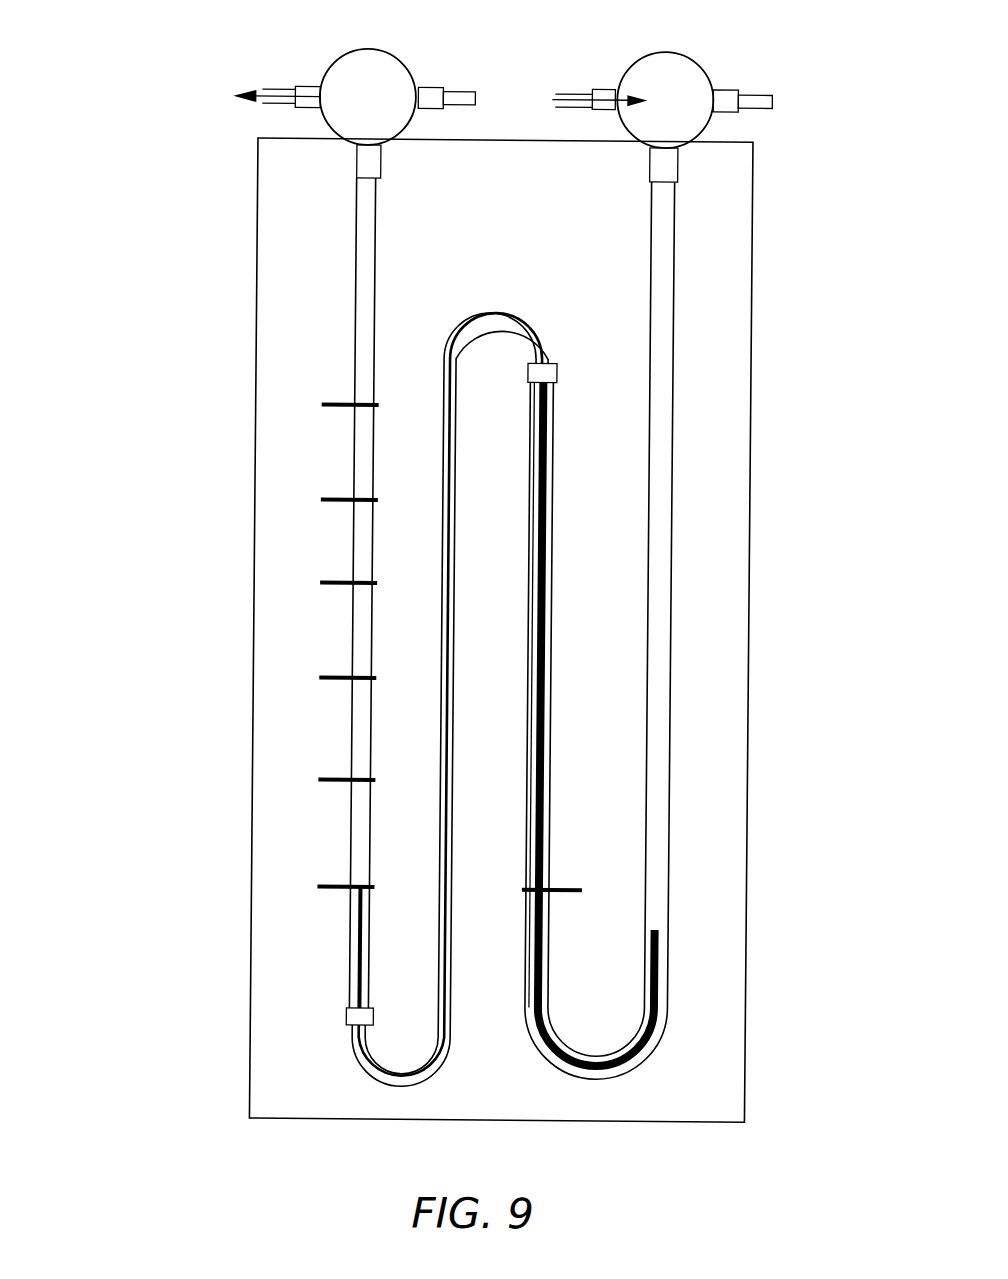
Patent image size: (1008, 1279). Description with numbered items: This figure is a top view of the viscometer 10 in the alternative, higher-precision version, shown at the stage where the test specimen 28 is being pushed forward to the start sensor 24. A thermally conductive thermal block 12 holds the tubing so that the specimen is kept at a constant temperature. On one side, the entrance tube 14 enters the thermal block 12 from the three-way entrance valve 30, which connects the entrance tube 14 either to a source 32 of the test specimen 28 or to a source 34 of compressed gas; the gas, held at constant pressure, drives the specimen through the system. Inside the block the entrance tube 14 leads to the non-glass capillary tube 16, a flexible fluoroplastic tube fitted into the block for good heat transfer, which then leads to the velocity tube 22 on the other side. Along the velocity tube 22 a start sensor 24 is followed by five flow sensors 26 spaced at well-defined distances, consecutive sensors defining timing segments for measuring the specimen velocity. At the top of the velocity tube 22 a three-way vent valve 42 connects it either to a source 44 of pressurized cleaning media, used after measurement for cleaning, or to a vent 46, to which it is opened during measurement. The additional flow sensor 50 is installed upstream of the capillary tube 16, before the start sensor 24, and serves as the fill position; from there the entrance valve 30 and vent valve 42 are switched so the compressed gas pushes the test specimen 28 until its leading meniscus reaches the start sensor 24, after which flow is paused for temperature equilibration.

The viscometer 10 is at (132, 534).
The thermal block 12 is at (703, 767).
The entrance tube 14 is at (675, 651).
The capillary tube 16 is at (458, 1023).
The velocity tube 22 is at (357, 285).
The start sensor 24 is at (324, 886).
The flow sensors 26 is at (324, 404).
The test specimen 28 is at (667, 963).
The entrance valve 30 is at (632, 61).
The source of the test specimen 32 is at (575, 91).
The source of compressed gas 34 is at (753, 91).
The vent valve 42 is at (402, 62).
The source of pressurized cleaning media 44 is at (457, 90).
The vent 46 is at (283, 89).
The additional flow sensor 50 is at (549, 891).